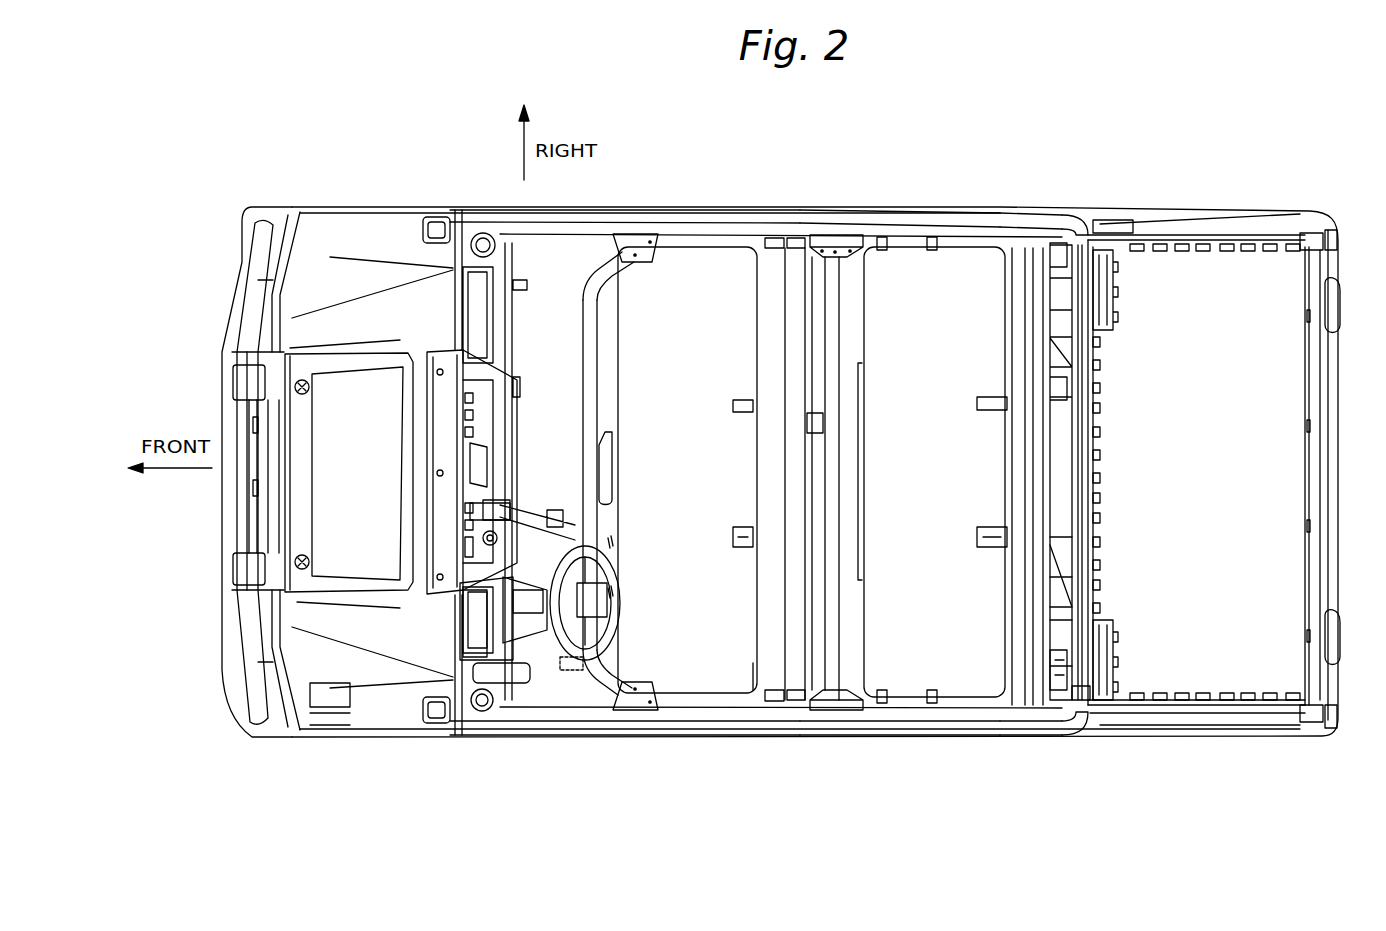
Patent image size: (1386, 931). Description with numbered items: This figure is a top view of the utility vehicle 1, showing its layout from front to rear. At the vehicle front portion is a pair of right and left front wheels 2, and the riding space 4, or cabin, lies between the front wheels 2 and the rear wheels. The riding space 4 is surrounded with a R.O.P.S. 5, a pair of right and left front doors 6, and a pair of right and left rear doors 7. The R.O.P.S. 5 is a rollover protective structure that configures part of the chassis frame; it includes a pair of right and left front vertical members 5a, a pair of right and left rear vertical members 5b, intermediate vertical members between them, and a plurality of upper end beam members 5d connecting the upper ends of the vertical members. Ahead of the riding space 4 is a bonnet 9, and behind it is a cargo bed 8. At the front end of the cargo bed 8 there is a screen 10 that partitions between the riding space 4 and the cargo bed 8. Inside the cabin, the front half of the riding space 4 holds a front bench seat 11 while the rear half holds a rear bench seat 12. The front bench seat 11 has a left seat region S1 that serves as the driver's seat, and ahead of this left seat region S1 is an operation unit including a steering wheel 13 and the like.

The utility vehicle 1 is at (1260, 150).
The front wheels 2 is at (288, 218).
The riding space 4 is at (723, 258).
The R.O.P.S. 5 is at (920, 202).
The front vertical members 5a is at (476, 218).
The rear vertical members 5b is at (1045, 216).
The upper end beam members 5d is at (790, 222).
The front doors 6 is at (640, 210).
The rear doors 7 is at (878, 210).
The cargo bed 8 is at (1185, 270).
The bonnet 9 is at (345, 385).
The screen 10 is at (1083, 697).
The front bench seat 11 is at (692, 222).
The rear bench seat 12 is at (960, 272).
The steering wheel 13 is at (560, 650).
The left seat region S1 is at (692, 660).